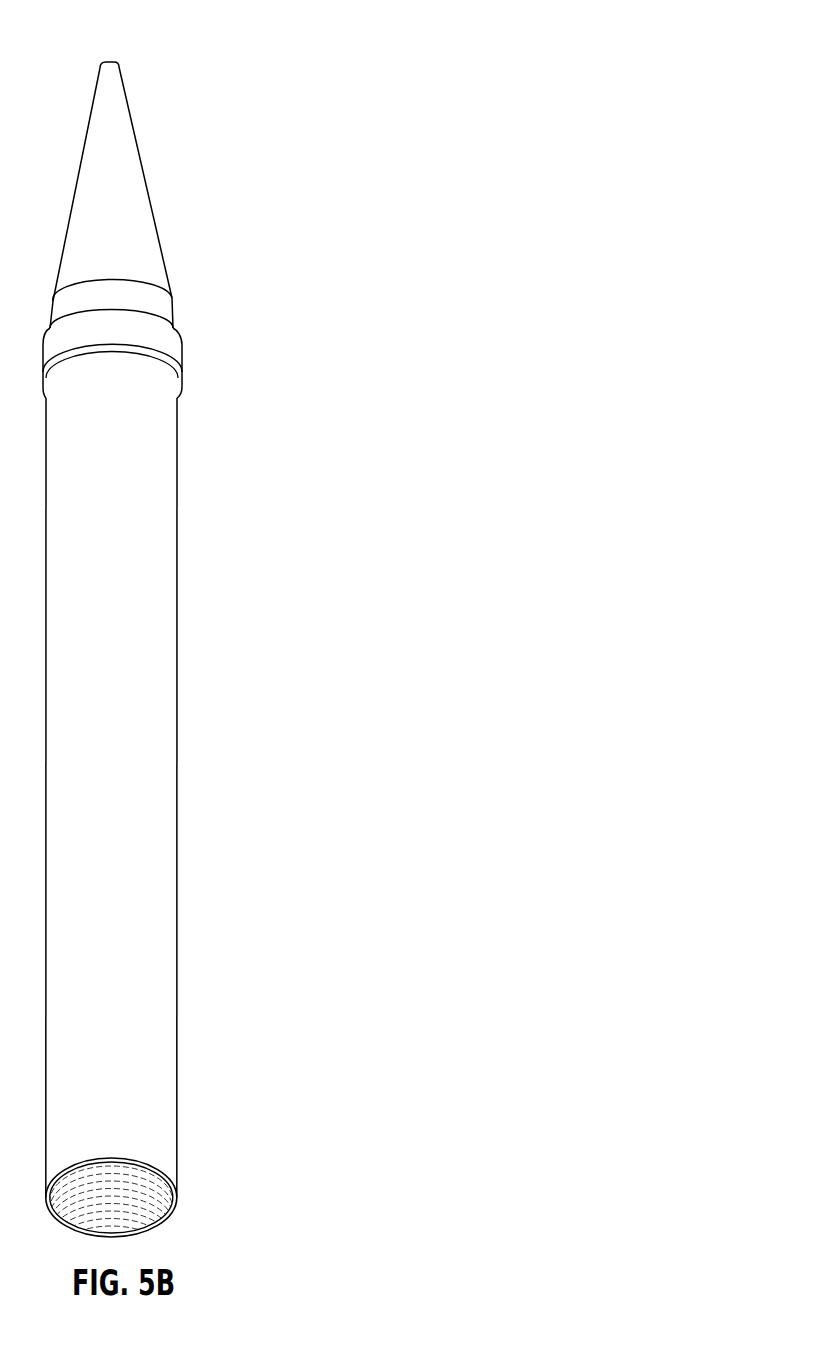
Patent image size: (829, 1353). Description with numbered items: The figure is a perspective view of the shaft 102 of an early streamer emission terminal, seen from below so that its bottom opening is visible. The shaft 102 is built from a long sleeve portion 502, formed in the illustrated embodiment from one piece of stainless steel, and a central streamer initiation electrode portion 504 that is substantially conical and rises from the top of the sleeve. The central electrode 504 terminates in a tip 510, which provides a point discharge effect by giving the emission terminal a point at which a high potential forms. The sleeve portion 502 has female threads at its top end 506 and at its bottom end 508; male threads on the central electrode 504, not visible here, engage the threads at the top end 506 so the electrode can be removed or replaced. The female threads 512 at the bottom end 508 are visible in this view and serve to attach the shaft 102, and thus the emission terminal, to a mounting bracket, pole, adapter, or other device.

The shaft 102 is at (354, 183).
The sleeve portion 502 is at (138, 825).
The central streamer initiation electrode portion 504 is at (137, 258).
The top end 506 is at (185, 390).
The bottom end 508 is at (178, 1148).
The tip 510 is at (120, 62).
The female threads 512 is at (112, 1203).